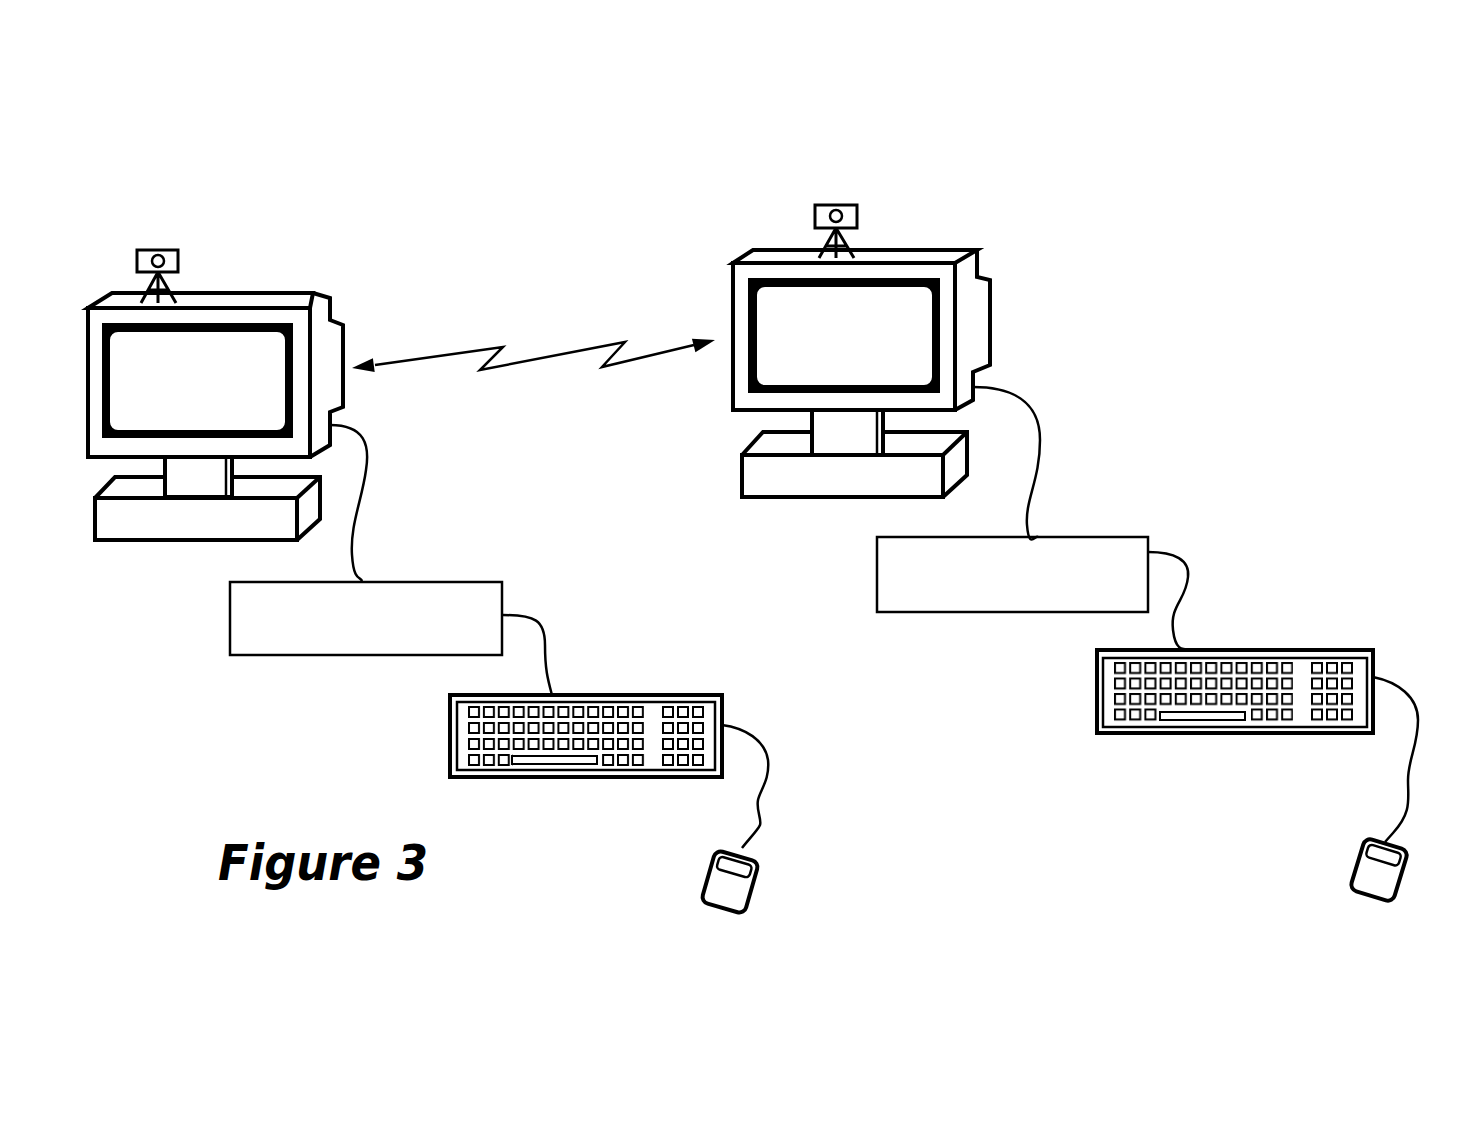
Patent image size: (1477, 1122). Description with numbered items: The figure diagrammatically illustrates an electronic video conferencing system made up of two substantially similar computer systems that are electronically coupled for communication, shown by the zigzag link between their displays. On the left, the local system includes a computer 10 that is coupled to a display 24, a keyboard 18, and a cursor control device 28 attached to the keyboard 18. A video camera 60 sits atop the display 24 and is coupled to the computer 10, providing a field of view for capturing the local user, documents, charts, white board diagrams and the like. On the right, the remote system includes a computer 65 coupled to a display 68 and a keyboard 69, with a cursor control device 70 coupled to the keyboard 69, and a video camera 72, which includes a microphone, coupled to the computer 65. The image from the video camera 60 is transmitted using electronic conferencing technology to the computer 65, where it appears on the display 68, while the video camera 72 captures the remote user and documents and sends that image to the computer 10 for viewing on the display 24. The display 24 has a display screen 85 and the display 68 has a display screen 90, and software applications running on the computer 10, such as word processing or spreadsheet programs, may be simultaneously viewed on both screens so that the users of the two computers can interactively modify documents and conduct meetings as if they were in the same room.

The computer 10 is at (366, 618).
The keyboard 18 is at (655, 695).
The display 24 is at (345, 330).
The cursor control device 28 is at (780, 875).
The video camera 60 is at (180, 262).
The computer 65 is at (1012, 574).
The display 68 is at (990, 318).
The keyboard 69 is at (1307, 650).
The cursor control device 70 is at (1418, 825).
The video camera 72 is at (858, 220).
The display screen 85 is at (239, 388).
The display screen 90 is at (885, 341).